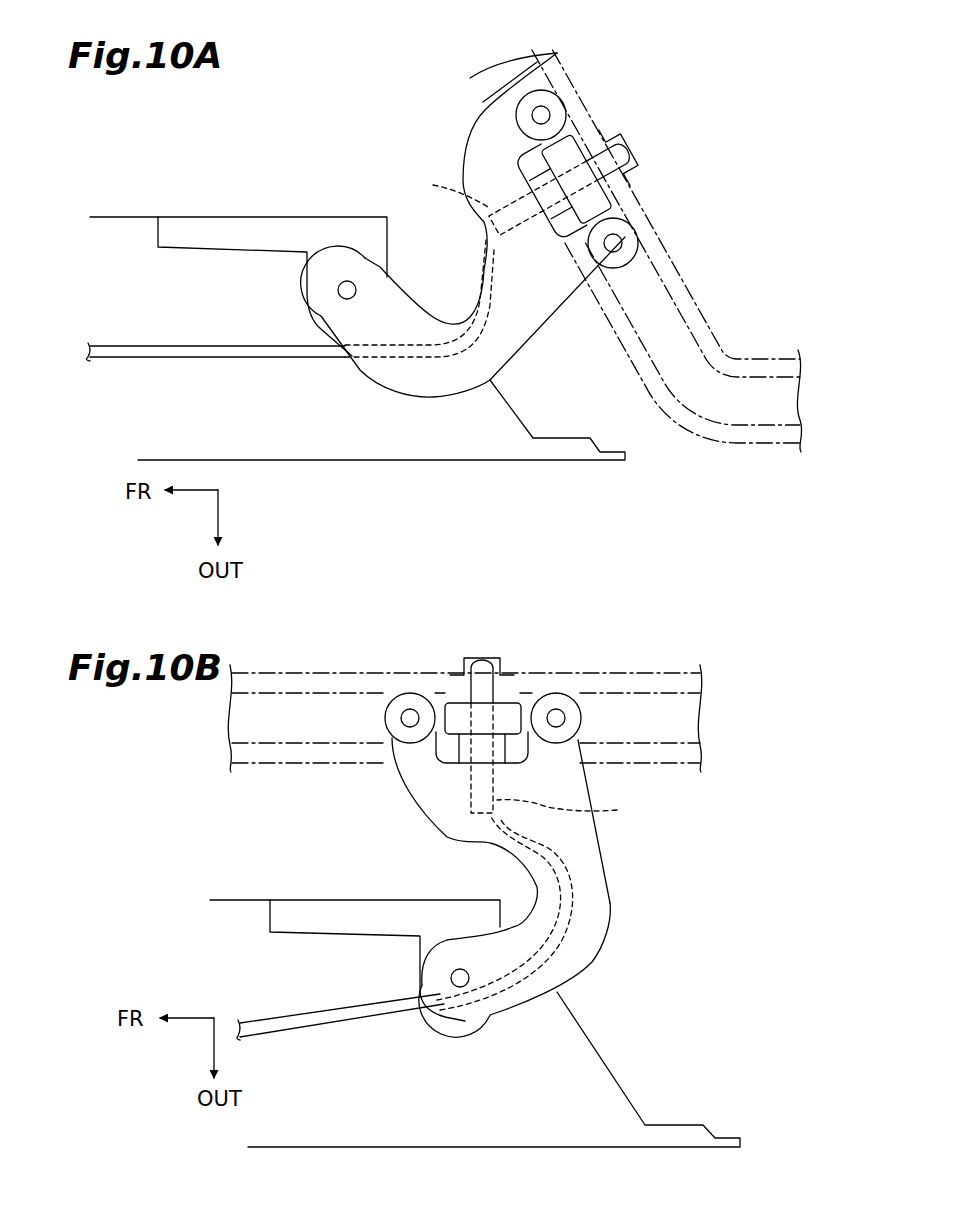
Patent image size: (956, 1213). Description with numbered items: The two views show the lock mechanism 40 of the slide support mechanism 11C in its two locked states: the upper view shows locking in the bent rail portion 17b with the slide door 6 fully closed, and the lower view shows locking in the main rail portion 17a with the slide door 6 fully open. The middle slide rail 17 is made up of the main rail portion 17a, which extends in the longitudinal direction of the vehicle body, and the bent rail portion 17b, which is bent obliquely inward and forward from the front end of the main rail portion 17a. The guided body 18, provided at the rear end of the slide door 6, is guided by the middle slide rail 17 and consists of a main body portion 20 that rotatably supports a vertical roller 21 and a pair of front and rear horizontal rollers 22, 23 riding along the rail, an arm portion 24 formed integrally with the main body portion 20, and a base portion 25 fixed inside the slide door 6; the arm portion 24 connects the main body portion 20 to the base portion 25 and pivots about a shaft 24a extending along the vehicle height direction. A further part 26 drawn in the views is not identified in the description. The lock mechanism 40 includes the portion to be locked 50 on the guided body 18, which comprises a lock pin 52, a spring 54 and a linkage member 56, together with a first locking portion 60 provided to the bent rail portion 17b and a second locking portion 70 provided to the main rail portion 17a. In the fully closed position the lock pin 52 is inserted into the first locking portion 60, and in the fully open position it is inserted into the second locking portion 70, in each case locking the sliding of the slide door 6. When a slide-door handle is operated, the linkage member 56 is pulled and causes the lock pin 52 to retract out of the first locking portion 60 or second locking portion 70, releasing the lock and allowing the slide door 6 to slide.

In FIG. 10A, the slide door 6 is at (305, 442).
In FIG. 10B, the slide door 6 is at (350, 1134).
In FIG. 10A, the slide support mechanism 11C is at (688, 108).
In FIG. 10B, the slide support mechanism 11C is at (367, 675).
In FIG. 10A, the middle slide rail 17 is at (820, 252).
In FIG. 10A, the main rail portion 17a is at (782, 360).
In FIG. 10B, the main rail portion 17a is at (657, 677).
In FIG. 10A, the bent rail portion 17b is at (693, 300).
In FIG. 10A, the guided body 18 is at (620, 168).
In FIG. 10B, the guided body 18 is at (500, 693).
In FIG. 10A, the main body portion 20 is at (487, 168).
In FIG. 10B, the main body portion 20 is at (572, 781).
In FIG. 10A, the vertical roller 21 is at (567, 147).
In FIG. 10B, the vertical roller 21 is at (463, 713).
In FIG. 10A, the front horizontal roller 22 is at (553, 105).
In FIG. 10B, the front horizontal roller 22 is at (417, 701).
In FIG. 10A, the rear horizontal roller 23 is at (630, 243).
In FIG. 10B, the rear horizontal roller 23 is at (567, 703).
In FIG. 10A, the arm portion 24 is at (437, 373).
In FIG. 10B, the arm portion 24 is at (590, 931).
In FIG. 10A, the shaft 24a is at (355, 290).
In FIG. 10B, the shaft 24a is at (462, 988).
In FIG. 10A, the base portion 25 is at (238, 225).
In FIG. 10B, the base portion 25 is at (315, 920).
In FIG. 10A, the base portion of roller bracket 26 is at (505, 116).
In FIG. 10B, the base portion of roller bracket 26 is at (437, 753).
In FIG. 10A, the lock mechanism 40 is at (660, 177).
In FIG. 10B, the lock mechanism 40 is at (447, 650).
In FIG. 10A, the portion to be locked 50 is at (516, 250).
In FIG. 10B, the portion to be locked 50 is at (468, 777).
In FIG. 10A, the lock pin 52 is at (632, 152).
In FIG. 10B, the lock pin 52 is at (481, 667).
In FIG. 10A, the spring 54 is at (419, 259).
In FIG. 10B, the spring 54 is at (545, 901).
In FIG. 10A, the linkage member 56 is at (205, 352).
In FIG. 10B, the linkage member 56 is at (337, 1018).
In FIG. 10A, the first locking portion 60 is at (630, 140).
In FIG. 10B, the second locking portion 70 is at (478, 655).